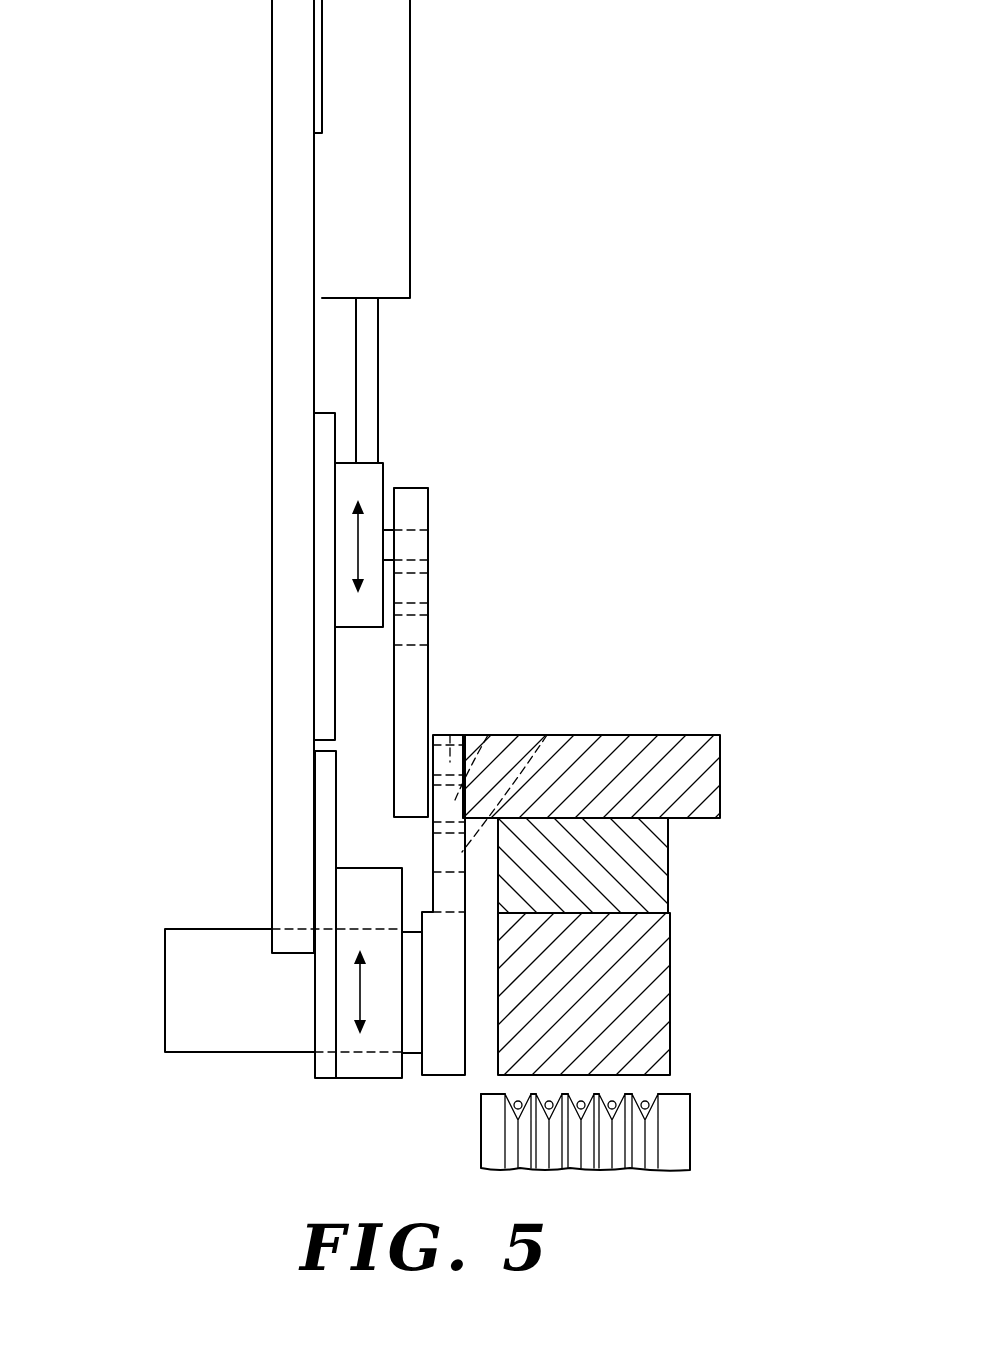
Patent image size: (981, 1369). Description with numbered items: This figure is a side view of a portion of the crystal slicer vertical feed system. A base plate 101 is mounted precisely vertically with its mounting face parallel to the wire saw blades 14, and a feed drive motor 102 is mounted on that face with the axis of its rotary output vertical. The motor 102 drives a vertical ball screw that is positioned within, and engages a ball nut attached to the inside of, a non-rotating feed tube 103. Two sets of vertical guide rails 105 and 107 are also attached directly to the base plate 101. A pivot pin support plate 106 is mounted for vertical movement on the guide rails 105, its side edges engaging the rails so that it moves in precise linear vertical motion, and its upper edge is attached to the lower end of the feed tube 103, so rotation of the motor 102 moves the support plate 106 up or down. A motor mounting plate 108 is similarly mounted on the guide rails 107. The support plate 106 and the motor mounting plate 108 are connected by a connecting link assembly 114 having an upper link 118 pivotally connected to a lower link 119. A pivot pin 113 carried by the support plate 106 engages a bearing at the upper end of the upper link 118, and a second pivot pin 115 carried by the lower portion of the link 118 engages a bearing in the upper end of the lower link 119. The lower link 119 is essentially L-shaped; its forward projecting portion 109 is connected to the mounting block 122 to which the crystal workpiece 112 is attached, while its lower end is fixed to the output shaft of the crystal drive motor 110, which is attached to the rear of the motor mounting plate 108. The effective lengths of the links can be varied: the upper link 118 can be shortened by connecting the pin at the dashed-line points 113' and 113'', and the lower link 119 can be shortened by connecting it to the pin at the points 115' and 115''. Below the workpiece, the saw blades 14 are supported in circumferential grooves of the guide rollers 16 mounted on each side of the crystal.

The base plate 101 is at (270, 214).
The feed drive motor 102 is at (412, 204).
The feed tube 103 is at (380, 388).
The vertical guide rails 105 is at (318, 528).
The pivot pin support plate 106 is at (338, 480).
The vertical guide rails 107 is at (318, 820).
The motor mounting plate 108 is at (348, 897).
The forward projecting portion 109 is at (702, 738).
The crystal drive motor 110 is at (205, 930).
The crystal workpiece 112 is at (672, 970).
The pivot pin 113 is at (457, 545).
The alternative pivot pin connection point 113' is at (460, 588).
The alternative pivot pin connection point 113'' is at (463, 630).
The connecting link assembly 114 is at (417, 508).
The second pivot pin 115 is at (474, 726).
The alternative second pivot pin connection point 115' is at (508, 744).
The alternative second pivot pin connection point 115'' is at (545, 777).
The upper link 118 is at (417, 678).
The lower link 119 is at (437, 860).
The mounting block 122 is at (653, 860).
The wire saw blades 14 is at (549, 1100).
The guide rollers 16 is at (690, 1143).